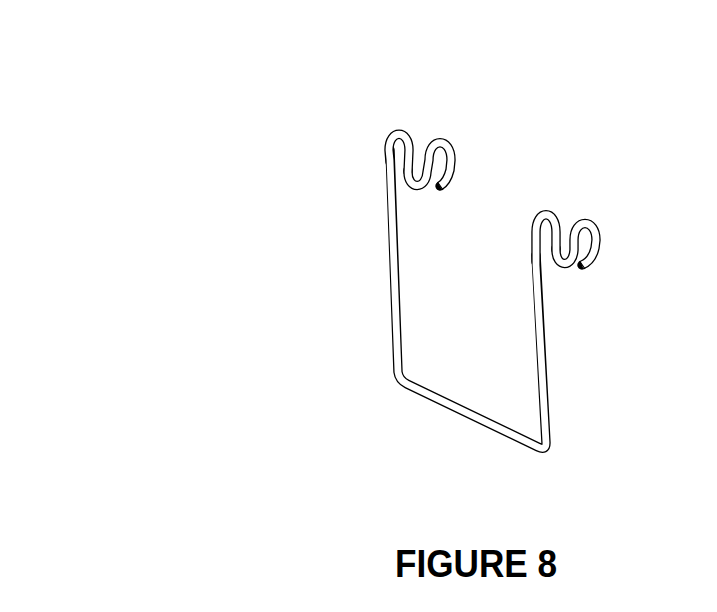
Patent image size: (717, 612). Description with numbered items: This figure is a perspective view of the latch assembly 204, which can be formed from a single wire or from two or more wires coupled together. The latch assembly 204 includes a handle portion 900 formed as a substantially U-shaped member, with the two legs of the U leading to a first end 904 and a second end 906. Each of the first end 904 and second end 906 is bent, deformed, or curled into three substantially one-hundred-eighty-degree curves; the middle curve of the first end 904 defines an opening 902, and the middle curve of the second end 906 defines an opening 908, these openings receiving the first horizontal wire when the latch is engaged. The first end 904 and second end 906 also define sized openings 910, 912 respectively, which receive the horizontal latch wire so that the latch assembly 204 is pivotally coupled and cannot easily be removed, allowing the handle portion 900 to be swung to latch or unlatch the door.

The latch assembly 204 is at (193, 199).
The handle portion 900 is at (450, 410).
The opening 902 is at (615, 248).
The first end 904 is at (568, 272).
The second end 906 is at (412, 195).
The opening 908 is at (429, 157).
The sized opening 910 is at (548, 247).
The sized opening 912 is at (393, 161).